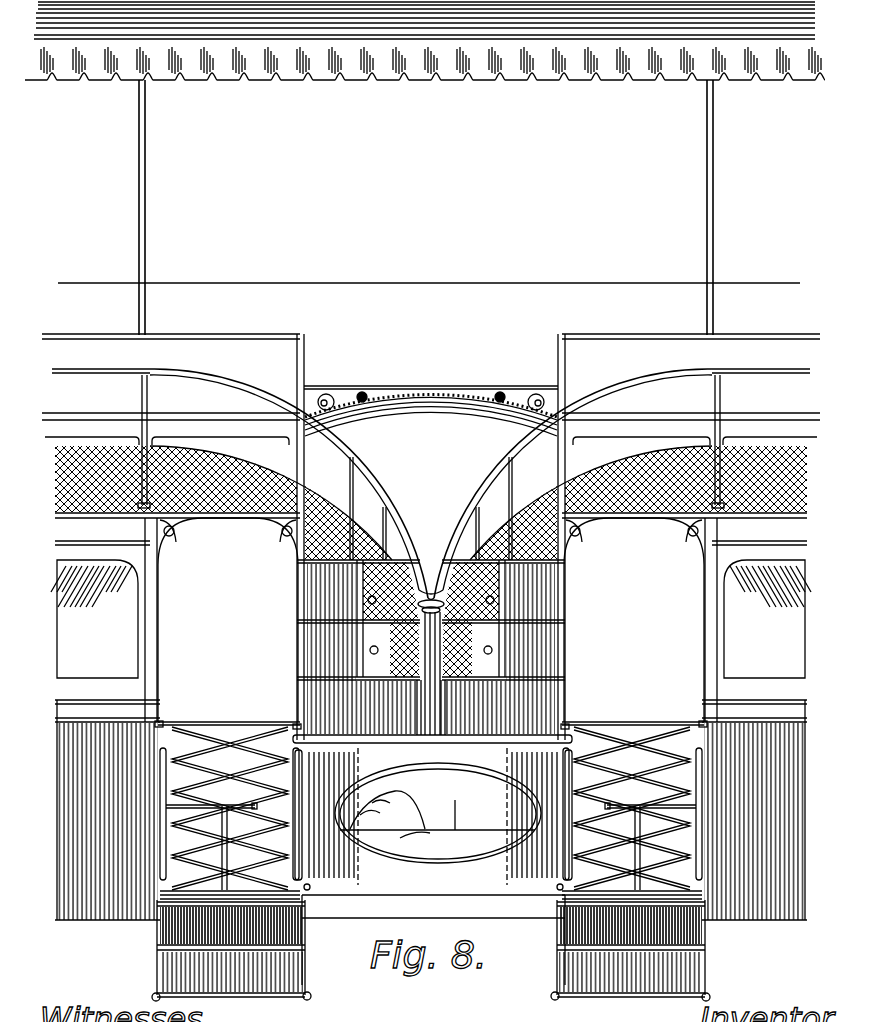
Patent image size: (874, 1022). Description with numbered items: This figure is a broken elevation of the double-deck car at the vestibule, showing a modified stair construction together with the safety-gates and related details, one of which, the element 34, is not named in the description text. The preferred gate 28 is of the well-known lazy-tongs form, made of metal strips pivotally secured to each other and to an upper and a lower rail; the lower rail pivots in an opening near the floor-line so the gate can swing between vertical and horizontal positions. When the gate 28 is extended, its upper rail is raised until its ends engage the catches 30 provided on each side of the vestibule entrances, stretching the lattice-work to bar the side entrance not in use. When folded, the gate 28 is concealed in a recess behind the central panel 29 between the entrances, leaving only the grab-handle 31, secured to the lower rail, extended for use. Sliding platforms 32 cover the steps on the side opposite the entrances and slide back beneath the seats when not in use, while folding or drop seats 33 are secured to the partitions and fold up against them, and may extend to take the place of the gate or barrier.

The gate 28 is at (650, 722).
The central panel 29 is at (433, 819).
The catches 30 is at (740, 730).
The grab-handle 31 is at (575, 834).
The sliding platforms 32 is at (738, 893).
The folding or drop seats 33 is at (431, 806).
The step 34 is at (431, 950).